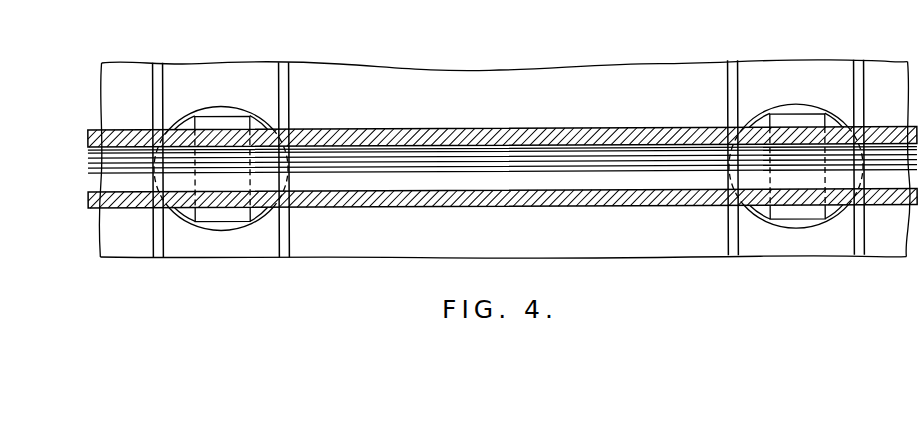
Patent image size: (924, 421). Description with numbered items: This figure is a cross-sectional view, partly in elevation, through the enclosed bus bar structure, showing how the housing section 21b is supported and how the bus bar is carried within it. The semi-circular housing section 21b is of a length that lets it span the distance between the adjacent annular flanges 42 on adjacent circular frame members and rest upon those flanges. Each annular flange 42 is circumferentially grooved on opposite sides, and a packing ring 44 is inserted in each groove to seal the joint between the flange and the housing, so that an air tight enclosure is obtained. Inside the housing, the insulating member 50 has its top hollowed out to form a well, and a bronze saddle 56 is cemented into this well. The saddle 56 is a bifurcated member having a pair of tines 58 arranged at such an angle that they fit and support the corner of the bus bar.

The housing section 21b is at (512, 59).
The annular flange 42 is at (267, 72).
The packing ring 44 is at (153, 85).
The insulating member 50 is at (208, 116).
The bronze saddle 56 is at (222, 126).
The tine 58 is at (234, 127).